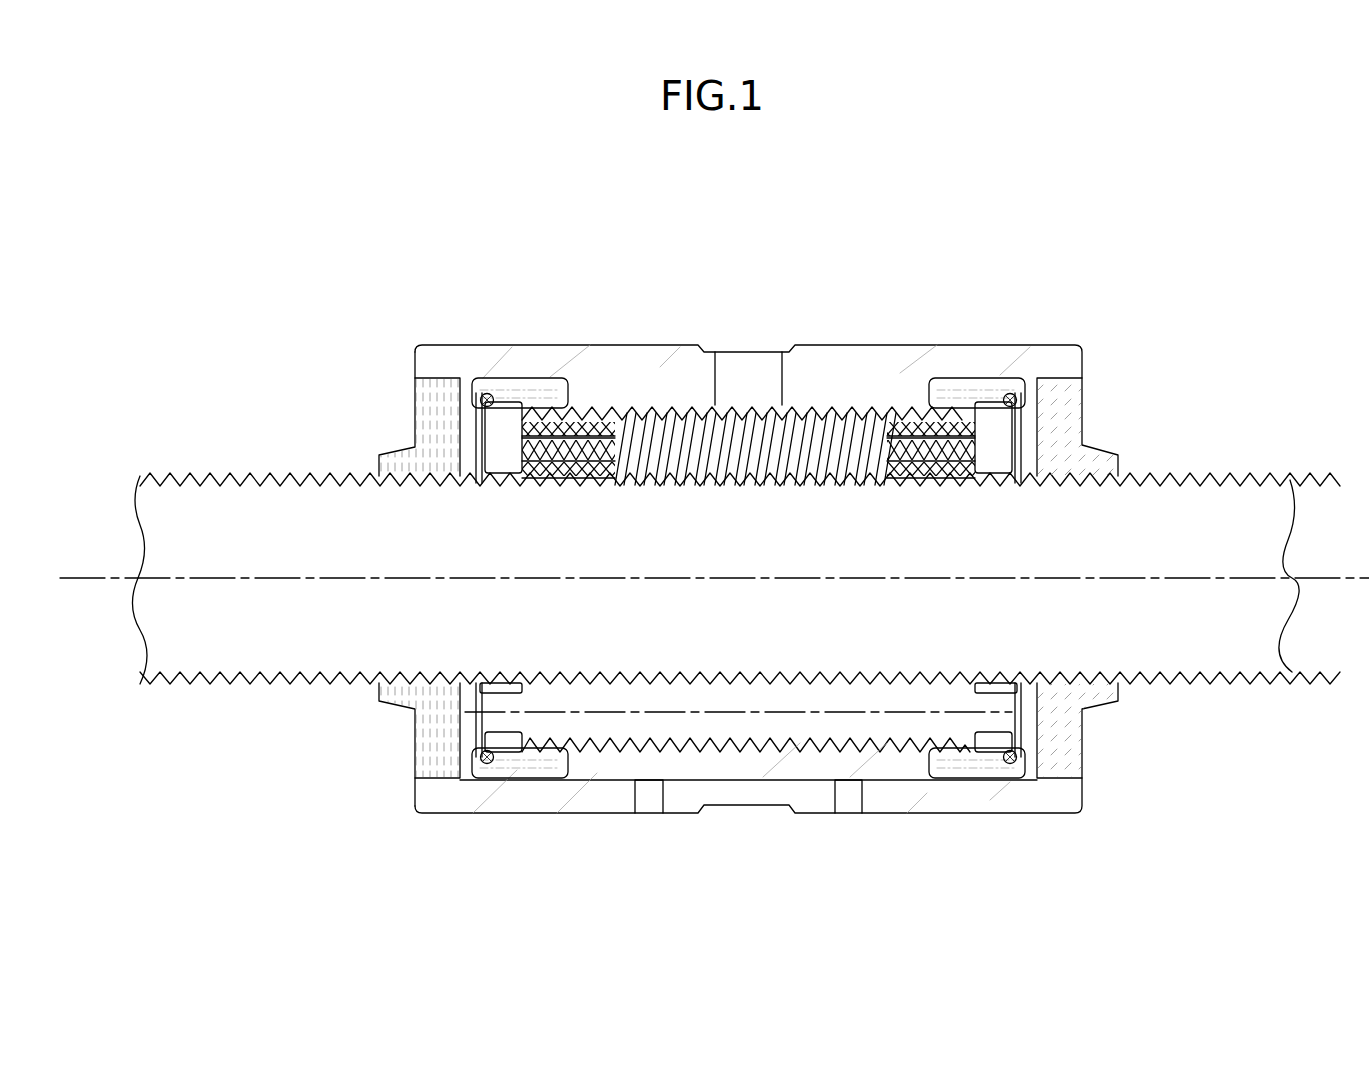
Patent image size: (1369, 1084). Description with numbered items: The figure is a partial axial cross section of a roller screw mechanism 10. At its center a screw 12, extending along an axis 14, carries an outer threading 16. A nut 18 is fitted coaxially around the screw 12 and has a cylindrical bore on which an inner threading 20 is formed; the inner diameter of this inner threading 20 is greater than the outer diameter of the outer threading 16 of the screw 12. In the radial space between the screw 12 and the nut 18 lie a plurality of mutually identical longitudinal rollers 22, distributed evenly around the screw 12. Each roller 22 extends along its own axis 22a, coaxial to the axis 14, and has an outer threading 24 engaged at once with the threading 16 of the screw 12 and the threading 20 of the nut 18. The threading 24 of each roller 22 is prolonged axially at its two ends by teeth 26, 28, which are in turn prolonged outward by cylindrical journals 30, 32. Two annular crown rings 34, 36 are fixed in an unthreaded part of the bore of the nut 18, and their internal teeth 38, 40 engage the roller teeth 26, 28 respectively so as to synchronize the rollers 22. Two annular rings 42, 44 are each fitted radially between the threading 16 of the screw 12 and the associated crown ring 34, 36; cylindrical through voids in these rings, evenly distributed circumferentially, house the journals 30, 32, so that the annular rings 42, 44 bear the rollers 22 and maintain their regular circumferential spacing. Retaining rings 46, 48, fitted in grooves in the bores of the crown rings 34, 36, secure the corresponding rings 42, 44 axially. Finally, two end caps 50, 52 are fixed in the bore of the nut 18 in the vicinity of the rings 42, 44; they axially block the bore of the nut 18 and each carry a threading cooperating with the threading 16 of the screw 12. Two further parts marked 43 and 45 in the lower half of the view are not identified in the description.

The roller screw mechanism 10 is at (1084, 265).
The screw 12 is at (1254, 478).
The axis 14 is at (1330, 578).
The outer threading 16 is at (1185, 474).
The nut 18 is at (577, 345).
The inner threading 20 is at (755, 381).
The longitudinal rollers 22 is at (822, 403).
The axis of roller 22a is at (620, 713).
The outer threading of roller 24 is at (733, 410).
The teeth 26 is at (575, 430).
The teeth 28 is at (897, 407).
The cylindrical journal 30 is at (503, 717).
The cylindrical journal 32 is at (1000, 722).
The annular crown ring 34 is at (513, 384).
The annular crown ring 36 is at (979, 381).
The teeth of crown ring 38 is at (537, 410).
The teeth of crown ring 40 is at (960, 410).
The annular ring 42 is at (501, 422).
The first washer 43 is at (472, 712).
The annular ring 44 is at (991, 420).
The second washer 45 is at (1025, 712).
The retaining ring 46 is at (488, 765).
The retaining ring 48 is at (1015, 765).
The end cap 50 is at (441, 760).
The end cap 52 is at (1059, 762).